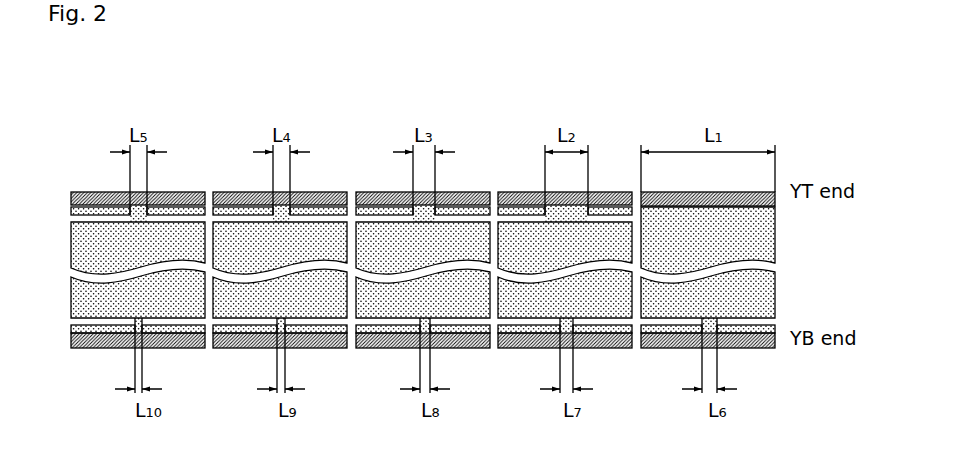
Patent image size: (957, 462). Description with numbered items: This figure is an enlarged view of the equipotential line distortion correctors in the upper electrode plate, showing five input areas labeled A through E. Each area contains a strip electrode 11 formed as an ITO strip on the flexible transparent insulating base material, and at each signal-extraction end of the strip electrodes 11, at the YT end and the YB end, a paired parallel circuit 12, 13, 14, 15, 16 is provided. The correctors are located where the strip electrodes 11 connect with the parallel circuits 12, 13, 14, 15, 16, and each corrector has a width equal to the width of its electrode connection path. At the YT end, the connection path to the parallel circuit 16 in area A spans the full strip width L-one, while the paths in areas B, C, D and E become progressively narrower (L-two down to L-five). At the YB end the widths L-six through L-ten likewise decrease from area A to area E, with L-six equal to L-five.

The strip electrode 11 is at (758, 240).
The parallel circuit 12 is at (172, 195).
The parallel circuit 13 is at (310, 195).
The parallel circuit 14 is at (440, 195).
The parallel circuit 15 is at (603, 195).
The parallel circuit 16 is at (720, 195).